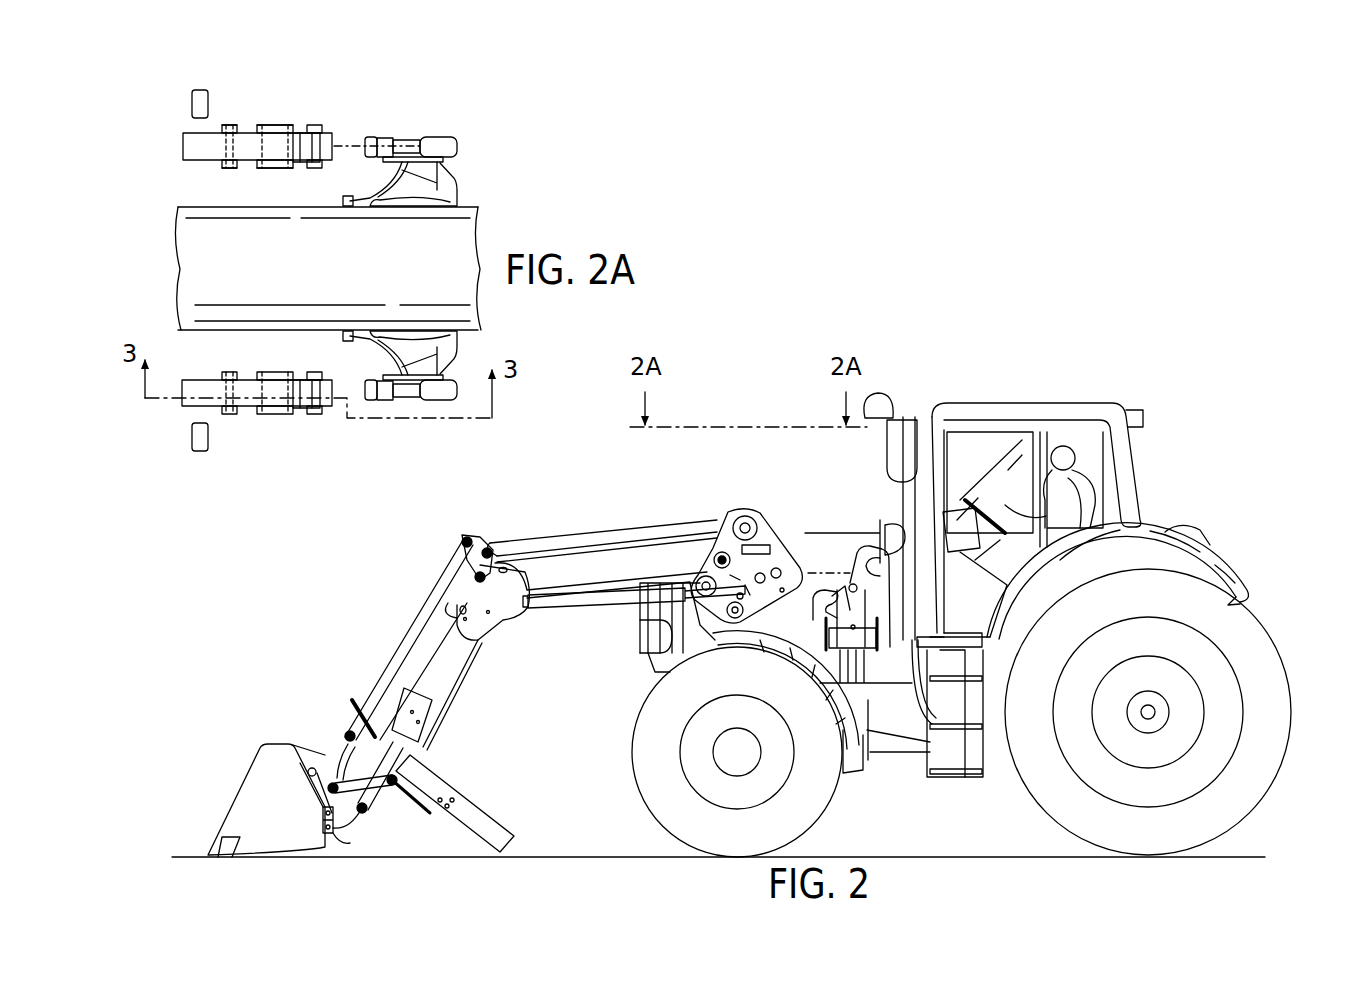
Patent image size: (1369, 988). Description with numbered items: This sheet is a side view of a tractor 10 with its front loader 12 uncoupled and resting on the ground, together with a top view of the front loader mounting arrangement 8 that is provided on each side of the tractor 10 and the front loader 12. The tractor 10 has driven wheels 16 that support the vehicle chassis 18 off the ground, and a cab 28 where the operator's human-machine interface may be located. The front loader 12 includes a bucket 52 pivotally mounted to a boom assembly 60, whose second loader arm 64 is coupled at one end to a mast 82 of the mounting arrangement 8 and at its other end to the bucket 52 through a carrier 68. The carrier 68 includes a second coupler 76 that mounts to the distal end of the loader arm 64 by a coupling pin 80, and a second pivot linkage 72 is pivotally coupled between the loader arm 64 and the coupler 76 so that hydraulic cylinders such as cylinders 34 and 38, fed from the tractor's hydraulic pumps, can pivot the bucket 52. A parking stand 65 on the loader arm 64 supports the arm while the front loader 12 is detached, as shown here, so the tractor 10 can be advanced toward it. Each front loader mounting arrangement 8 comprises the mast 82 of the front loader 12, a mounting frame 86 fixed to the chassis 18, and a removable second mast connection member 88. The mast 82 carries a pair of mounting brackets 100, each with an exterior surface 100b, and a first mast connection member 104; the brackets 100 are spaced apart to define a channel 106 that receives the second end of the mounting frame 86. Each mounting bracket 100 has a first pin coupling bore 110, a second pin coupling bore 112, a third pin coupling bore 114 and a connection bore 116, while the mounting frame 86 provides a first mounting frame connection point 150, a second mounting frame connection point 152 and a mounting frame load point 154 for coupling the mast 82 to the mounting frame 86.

In FIG. 2A, the front loader mounting arrangement 8 is at (322, 287).
In FIG. 2, the front loader mounting arrangement 8 is at (761, 578).
In FIG. 2, the tractor 10 is at (1118, 386).
In FIG. 2, the front loader 12 is at (492, 518).
In FIG. 2, the driven wheels 16 is at (1153, 710).
In FIG. 2, the vehicle chassis 18 is at (848, 740).
In FIG. 2, the cab 28 is at (978, 413).
In FIG. 2, the hydraulic cylinder 34 is at (570, 602).
In FIG. 2, the hydraulic cylinder 38 is at (392, 662).
In FIG. 2, the bucket 52 is at (278, 755).
In FIG. 2, the boom assembly 60 is at (524, 524).
In FIG. 2, the second loader arm 64 is at (472, 686).
In FIG. 2, the parking stand 65 is at (462, 813).
In FIG. 2, the carrier 68 is at (356, 843).
In FIG. 2, the second pivot linkage 72 is at (336, 760).
In FIG. 2, the second coupler 76 is at (334, 832).
In FIG. 2, the coupling pins 80 is at (372, 822).
In FIG. 2A, the mast 82 is at (245, 124).
In FIG. 2, the mast 82 is at (758, 510).
In FIG. 2A, the mounting frame 86 is at (441, 121).
In FIG. 2, the mounting frame 86 is at (850, 546).
In FIG. 2A, the second mast connection member 88 is at (190, 103).
In FIG. 2, the second mast connection member 88 is at (768, 541).
In FIG. 2A, the mounting brackets 100 is at (229, 124).
In FIG. 2, the mounting brackets 100 is at (690, 560).
In FIG. 2, the exterior surface 100b is at (770, 516).
In FIG. 2A, the first mast connection member 104 is at (322, 143).
In FIG. 2A, the channel 106 is at (303, 140).
In FIG. 2, the first pin coupling bore 110 is at (740, 518).
In FIG. 2, the second pin coupling bore 112 is at (720, 550).
In FIG. 2, the third pin coupling bore 114 is at (645, 643).
In FIG. 2, the connection bore 116 is at (652, 660).
In FIG. 2, the first mounting frame connection point 150 is at (880, 590).
In FIG. 2, the second mounting frame connection point 152 is at (810, 612).
In FIG. 2, the mounting frame load point 154 is at (840, 600).